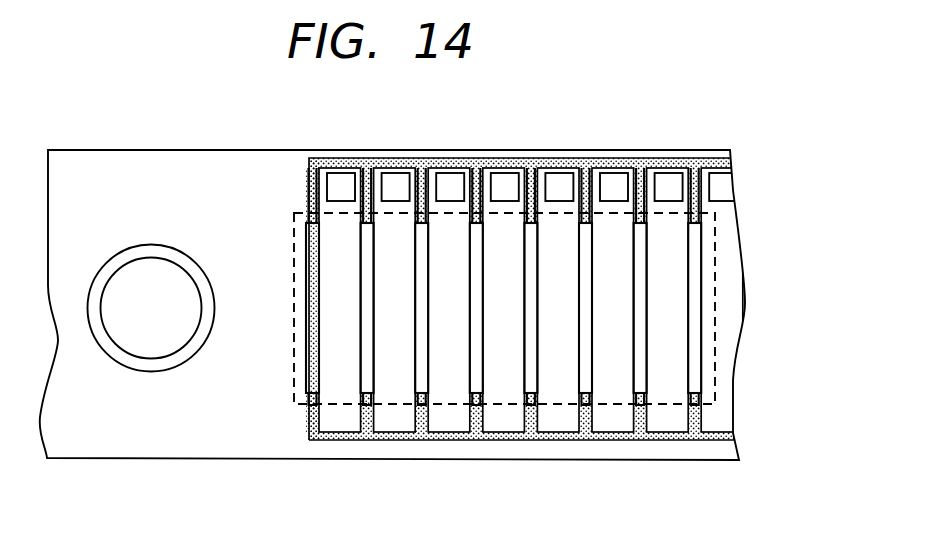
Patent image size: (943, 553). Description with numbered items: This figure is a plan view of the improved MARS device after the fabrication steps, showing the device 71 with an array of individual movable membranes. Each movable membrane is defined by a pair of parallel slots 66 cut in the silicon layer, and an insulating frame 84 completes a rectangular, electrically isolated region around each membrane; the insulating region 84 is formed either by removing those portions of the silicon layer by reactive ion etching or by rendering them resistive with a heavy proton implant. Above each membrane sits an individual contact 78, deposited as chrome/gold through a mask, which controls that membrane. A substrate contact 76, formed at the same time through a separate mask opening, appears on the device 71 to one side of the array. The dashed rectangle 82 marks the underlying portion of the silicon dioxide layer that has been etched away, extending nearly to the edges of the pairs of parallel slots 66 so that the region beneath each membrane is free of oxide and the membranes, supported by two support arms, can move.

The carrier strip / lead frame 71 is at (737, 345).
The substrate contact 76 is at (197, 264).
The dashed rectangle 82 is at (717, 238).
The insulating frames 84 is at (332, 160).
The individual contacts 78 is at (603, 173).
The parallel slots 66 is at (425, 285).